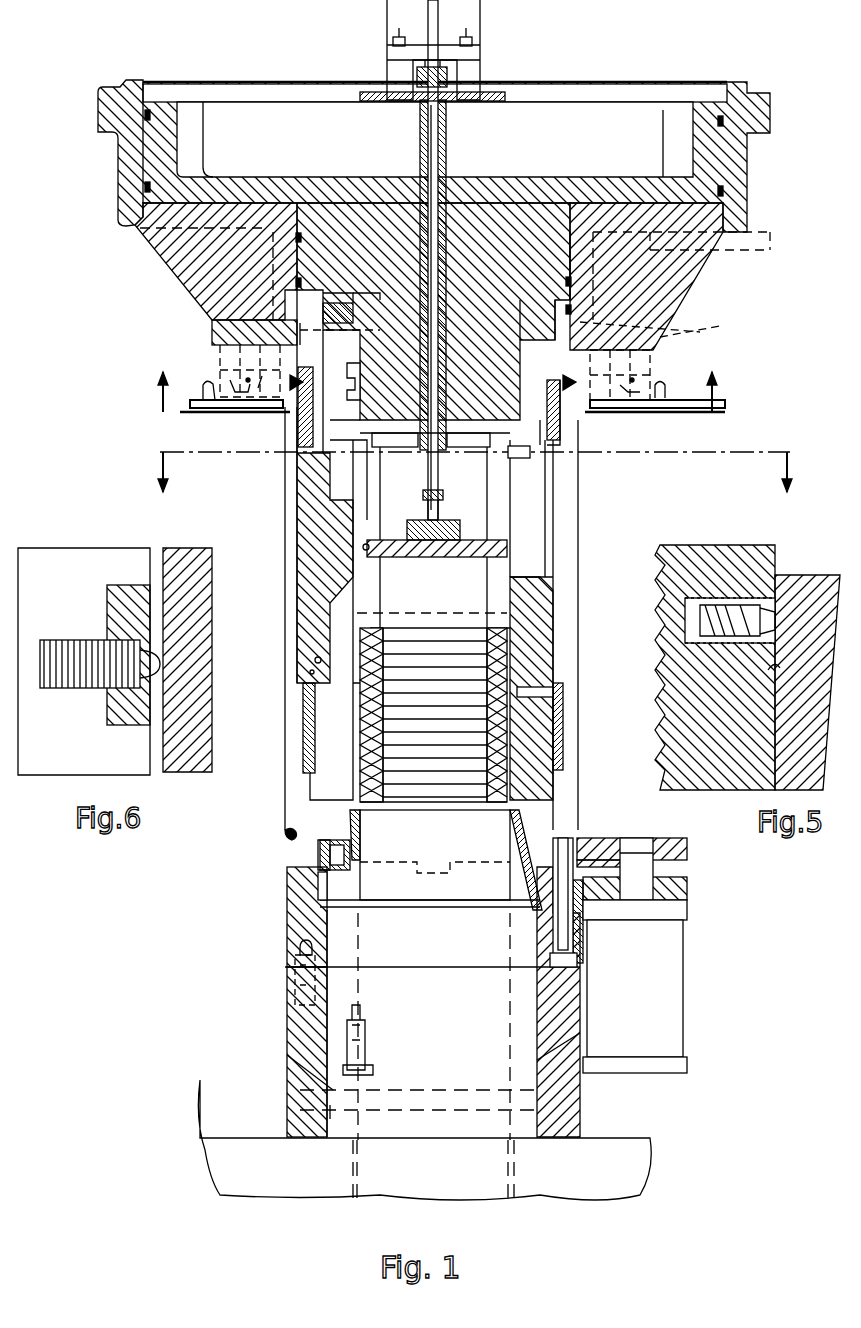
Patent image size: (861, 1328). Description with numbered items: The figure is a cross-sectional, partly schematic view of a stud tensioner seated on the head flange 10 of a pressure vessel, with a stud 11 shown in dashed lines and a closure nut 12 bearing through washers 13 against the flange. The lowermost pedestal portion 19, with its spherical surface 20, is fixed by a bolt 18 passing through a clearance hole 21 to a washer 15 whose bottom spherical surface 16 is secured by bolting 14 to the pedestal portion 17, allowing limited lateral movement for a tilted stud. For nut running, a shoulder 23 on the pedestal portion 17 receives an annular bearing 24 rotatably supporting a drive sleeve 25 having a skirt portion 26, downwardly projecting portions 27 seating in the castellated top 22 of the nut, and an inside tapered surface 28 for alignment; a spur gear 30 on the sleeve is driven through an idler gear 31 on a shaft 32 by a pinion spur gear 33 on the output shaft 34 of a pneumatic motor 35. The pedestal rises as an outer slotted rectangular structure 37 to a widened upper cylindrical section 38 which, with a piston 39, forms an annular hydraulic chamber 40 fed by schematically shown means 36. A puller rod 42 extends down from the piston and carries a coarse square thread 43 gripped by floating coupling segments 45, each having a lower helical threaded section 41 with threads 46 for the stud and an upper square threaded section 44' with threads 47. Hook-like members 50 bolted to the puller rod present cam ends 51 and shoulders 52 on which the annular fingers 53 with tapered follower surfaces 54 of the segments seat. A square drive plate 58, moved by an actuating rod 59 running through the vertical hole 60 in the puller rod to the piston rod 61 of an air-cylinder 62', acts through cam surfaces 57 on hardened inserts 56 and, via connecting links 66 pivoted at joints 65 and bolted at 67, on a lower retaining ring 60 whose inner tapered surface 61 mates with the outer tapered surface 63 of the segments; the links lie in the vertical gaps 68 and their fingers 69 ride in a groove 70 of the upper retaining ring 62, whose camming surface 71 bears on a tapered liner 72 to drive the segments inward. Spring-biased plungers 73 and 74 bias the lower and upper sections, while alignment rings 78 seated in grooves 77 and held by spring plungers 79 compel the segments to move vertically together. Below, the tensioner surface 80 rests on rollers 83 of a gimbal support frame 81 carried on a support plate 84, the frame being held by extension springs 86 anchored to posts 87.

In FIG. 1, the head flange 10 is at (640, 1165).
In FIG. 1, the stud 11 is at (432, 612).
In FIG. 1, the closure nut 12 is at (300, 1085).
In FIG. 1, the washers 13 is at (300, 1110).
In FIG. 1, the bolting 14 is at (295, 975).
In FIG. 1, the washer 15 is at (295, 1000).
In FIG. 1, the bottom spherical surface 16 is at (300, 1030).
In FIG. 1, the pedestal portion 17 is at (300, 948).
In FIG. 1, the bolt 18 is at (372, 1030).
In FIG. 1, the lowermost pedestal portion 19 is at (287, 1060).
In FIG. 1, the complementary spherical surface 20 is at (305, 1060).
In FIG. 1, the clearance hole 21 is at (375, 1068).
In FIG. 1, the castellated top 22 is at (440, 862).
In FIG. 1, the shoulder 23 is at (310, 905).
In FIG. 1, the annular bearing 24 is at (320, 900).
In FIG. 1, the drive sleeve 25 is at (300, 850).
In FIG. 1, the skirt portion 26 is at (320, 880).
In FIG. 1, the downwardly projecting portions 27 is at (355, 870).
In FIG. 1, the inside tapered surface 28 is at (507, 870).
In FIG. 1, the spur gear 30 is at (545, 830).
In FIG. 1, the idler gear 31 is at (565, 835).
In FIG. 1, the shaft 32 is at (650, 945).
In FIG. 1, the pinion spur gear 33 is at (680, 845).
In FIG. 1, the output shaft 34 is at (680, 890).
In FIG. 1, the pneumatic motor 35 is at (670, 1050).
In FIG. 1, the hydraulic fluid pumping means 36 is at (745, 248).
In FIG. 1, the outer slotted rectangular structure 37 is at (578, 585).
In FIG. 1, the upper cylindrical section 38 is at (120, 222).
In FIG. 1, the piston 39 is at (165, 178).
In FIG. 1, the annular hydraulic chamber 40 is at (150, 240).
In FIG. 1, the lower helical threaded section 41 is at (540, 765).
In FIG. 5, the lower helical threaded section 41 is at (730, 721).
In FIG. 1, the puller rod 42 is at (390, 200).
In FIG. 6, the puller rod 42 is at (205, 722).
In FIG. 1, the coarse square thread 43 is at (345, 385).
In FIG. 1, the upper square threaded section 44' is at (585, 437).
In FIG. 6, the upper square threaded section 44' is at (82, 675).
In FIG. 1, the coupling segments 45 is at (350, 615).
In FIG. 1, the helical threads 46 is at (485, 750).
In FIG. 1, the square threads 47 is at (560, 420).
In FIG. 1, the hook-like members 50 is at (630, 310).
In FIG. 1, the cam end 51 is at (655, 320).
In FIG. 1, the shoulder 52 is at (560, 230).
In FIG. 1, the annular finger 53 is at (510, 300).
In FIG. 1, the tapered follower surface 54 is at (540, 300).
In FIG. 1, the hardened insert 56 is at (530, 458).
In FIG. 1, the cam surfaces 57 is at (510, 550).
In FIG. 1, the drive plate 58 is at (490, 540).
In FIG. 1, the actuating rod 59 is at (450, 447).
In FIG. 1, the lower retaining ring 60 is at (448, 155).
In FIG. 5, the lower retaining ring 60 is at (815, 721).
In FIG. 1, the piston rod 61 is at (400, 75).
In FIG. 1, the upper retaining ring 62 is at (609, 413).
In FIG. 1, the air-cylinder 62' is at (463, 50).
In FIG. 1, the outer tapered surface 63 is at (556, 745).
In FIG. 5, the outer tapered surface 63 is at (778, 668).
In FIG. 1, the pivotable joint 65 is at (360, 550).
In FIG. 1, the connecting link 66 is at (310, 540).
In FIG. 1, the bolt connection 67 is at (312, 660).
In FIG. 1, the vertical gaps 68 is at (330, 480).
In FIG. 1, the annular finger 69 is at (300, 425).
In FIG. 1, the internal annular groove 70 is at (265, 420).
In FIG. 1, the lower camming surface 71 is at (300, 460).
In FIG. 1, the tapered liner 72 is at (560, 460).
In FIG. 1, the spring-biased plungers 73 is at (553, 710).
In FIG. 5, the spring-biased plungers 73 is at (735, 598).
In FIG. 1, the spring-biased plungers 74 is at (320, 300).
In FIG. 1, the inner annular groove 77 is at (230, 335).
In FIG. 6, the inner annular groove 77 is at (128, 600).
In FIG. 1, the alignment rings 78 is at (320, 315).
In FIG. 6, the alignment rings 78 is at (122, 617).
In FIG. 1, the spring plungers 79 is at (300, 310).
In FIG. 6, the spring plungers 79 is at (65, 690).
In FIG. 1, the tensioner surface 80 is at (648, 340).
In FIG. 1, the support frame 81 is at (175, 352).
In FIG. 1, the roller 83 is at (706, 325).
In FIG. 1, the support plate 84 is at (190, 404).
In FIG. 1, the extension springs 86 is at (220, 385).
In FIG. 1, the posts 87 is at (660, 398).